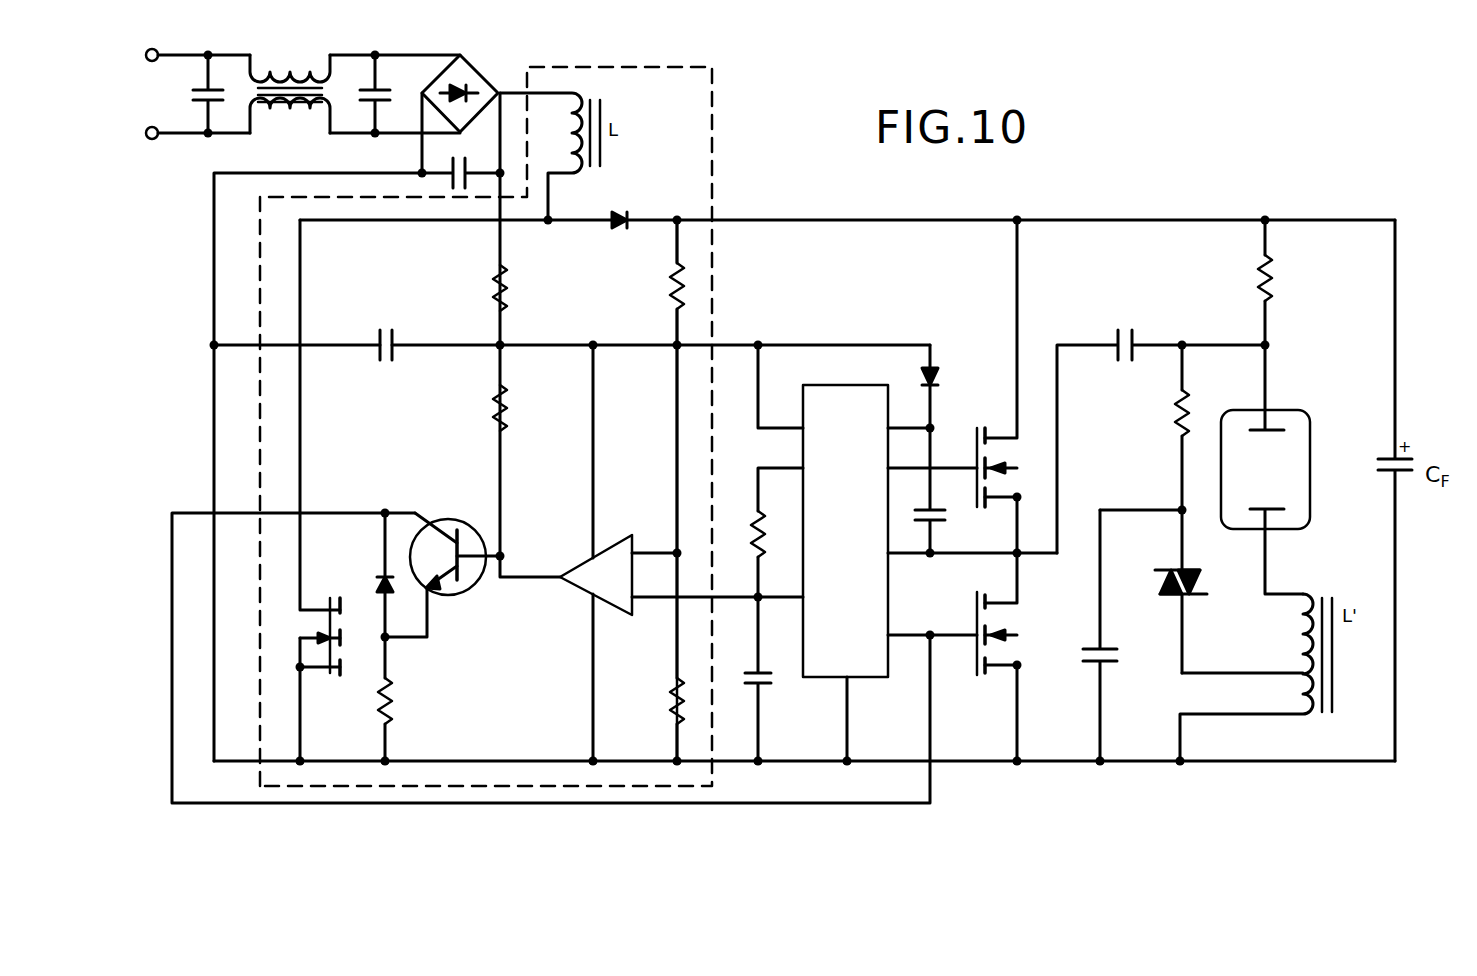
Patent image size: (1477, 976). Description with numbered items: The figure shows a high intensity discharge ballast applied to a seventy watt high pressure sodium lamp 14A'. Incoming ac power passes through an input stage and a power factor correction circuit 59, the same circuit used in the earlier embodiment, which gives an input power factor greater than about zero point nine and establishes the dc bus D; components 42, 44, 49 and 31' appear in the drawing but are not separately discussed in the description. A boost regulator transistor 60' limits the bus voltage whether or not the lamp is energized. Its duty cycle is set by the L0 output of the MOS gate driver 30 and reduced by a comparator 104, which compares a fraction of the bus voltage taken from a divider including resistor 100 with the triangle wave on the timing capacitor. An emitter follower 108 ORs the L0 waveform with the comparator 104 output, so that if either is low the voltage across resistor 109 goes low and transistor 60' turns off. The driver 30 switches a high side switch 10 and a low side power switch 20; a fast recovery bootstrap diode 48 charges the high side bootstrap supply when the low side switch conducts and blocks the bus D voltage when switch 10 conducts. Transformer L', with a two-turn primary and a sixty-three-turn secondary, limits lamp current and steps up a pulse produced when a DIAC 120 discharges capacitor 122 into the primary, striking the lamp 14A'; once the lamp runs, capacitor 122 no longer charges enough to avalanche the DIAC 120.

The bridge rectifier 42 is at (476, 63).
The power factor correction circuit 59 is at (714, 145).
The dc bus D is at (1125, 218).
The diode 49 is at (617, 240).
The capacitor 31' is at (374, 364).
The resistors 44 is at (495, 270).
The resistor 100 is at (668, 273).
The emitter follower stage 108 is at (477, 483).
The resistor 109 is at (393, 698).
The boost regulator transistor 60' is at (326, 667).
The comparator 104 is at (567, 583).
The MOS gate driver 30 is at (818, 672).
The bootstrap diode 48 is at (950, 375).
The high side switch 10 is at (1023, 458).
The low side power switch 20 is at (976, 680).
The high pressure sodium lamp 14A' is at (1298, 474).
The DIAC 120 is at (1205, 578).
The capacitor 122 is at (1078, 657).